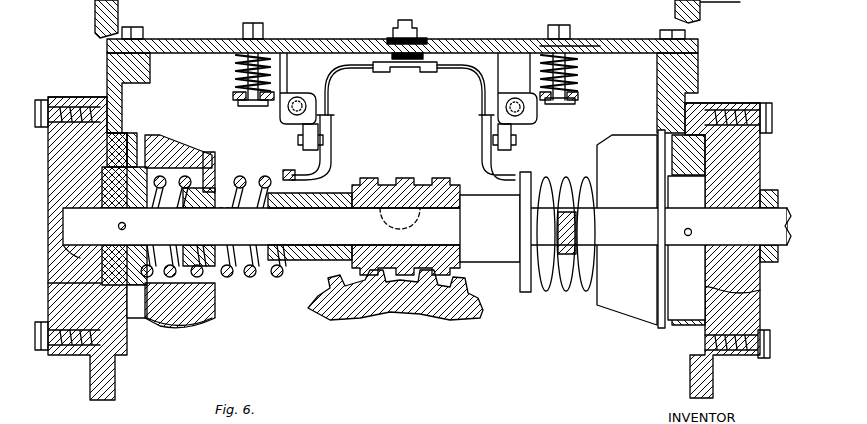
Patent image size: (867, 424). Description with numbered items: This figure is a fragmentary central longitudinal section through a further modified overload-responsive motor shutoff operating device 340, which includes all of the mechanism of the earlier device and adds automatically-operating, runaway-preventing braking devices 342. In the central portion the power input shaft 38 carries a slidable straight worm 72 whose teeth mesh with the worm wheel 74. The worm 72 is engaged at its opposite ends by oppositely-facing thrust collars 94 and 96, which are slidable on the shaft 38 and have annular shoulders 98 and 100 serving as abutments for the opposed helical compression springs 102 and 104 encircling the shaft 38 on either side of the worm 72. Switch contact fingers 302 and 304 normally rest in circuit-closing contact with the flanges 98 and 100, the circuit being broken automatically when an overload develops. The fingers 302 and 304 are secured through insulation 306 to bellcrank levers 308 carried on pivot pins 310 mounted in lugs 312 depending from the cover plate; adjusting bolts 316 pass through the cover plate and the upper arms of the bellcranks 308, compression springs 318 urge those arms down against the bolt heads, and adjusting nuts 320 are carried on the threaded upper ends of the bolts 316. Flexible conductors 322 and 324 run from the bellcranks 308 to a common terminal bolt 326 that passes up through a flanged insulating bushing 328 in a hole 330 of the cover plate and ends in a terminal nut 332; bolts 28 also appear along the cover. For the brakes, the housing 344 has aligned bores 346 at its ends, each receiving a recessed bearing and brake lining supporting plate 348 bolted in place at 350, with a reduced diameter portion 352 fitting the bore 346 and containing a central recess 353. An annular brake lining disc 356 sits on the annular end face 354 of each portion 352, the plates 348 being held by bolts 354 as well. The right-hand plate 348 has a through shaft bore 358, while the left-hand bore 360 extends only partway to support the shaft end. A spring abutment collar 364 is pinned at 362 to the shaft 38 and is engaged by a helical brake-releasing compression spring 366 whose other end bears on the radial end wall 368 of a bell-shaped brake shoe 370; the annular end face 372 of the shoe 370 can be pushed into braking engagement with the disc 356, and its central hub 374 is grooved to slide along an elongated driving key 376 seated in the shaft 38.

The bolt 28 is at (133, 30).
The power input shaft 38 is at (63, 223).
The worm 72 is at (425, 180).
The worm wheel 74 is at (425, 318).
The thrust collar 94 is at (482, 262).
The thrust collar 96 is at (330, 193).
The annular shoulder 98 is at (524, 293).
The annular shoulder 100 is at (268, 282).
The helical compression spring 102 is at (546, 178).
The helical compression spring 104 is at (245, 176).
The switch contact finger 302 is at (480, 148).
The switch contact finger 304 is at (333, 150).
The insulation 306 is at (302, 150).
The bellcrank lever 308 is at (264, 107).
The pivot pin 310 is at (297, 96).
The lug 312 is at (497, 66).
The adjusting bolt 316 is at (243, 28).
The compression spring 318 is at (238, 69).
The adjusting nut 320 is at (572, 42).
The flexible conductor 322 is at (480, 92).
The flexible conductor 324 is at (331, 80).
The terminal bolt 326 is at (402, 74).
The flanged insulating bushing 328 is at (428, 38).
The hole 330 is at (428, 54).
The terminal nut 332 is at (392, 32).
The overload-responsive motor shutoff operating device 340 is at (272, 36).
The braking device 342 is at (660, 133).
The housing 344 is at (718, 103).
The bore 346 is at (117, 135).
The bearing and brake lining supporting plate 348 is at (50, 162).
The bolt 350 is at (40, 100).
The reduced diameter portion 352 is at (134, 134).
The central recess 353 is at (48, 292).
The annular end face 354 is at (108, 318).
The brake lining disc 356 is at (135, 320).
The shaft bore 358 is at (768, 190).
The shaft bore 360 is at (63, 247).
The pin 362 is at (127, 226).
The spring abutment collar 364 is at (100, 202).
The brake-releasing compression spring 366 is at (205, 316).
The radial end wall 368 is at (200, 150).
The bell-shaped brake shoe 370 is at (212, 150).
The annular end face 372 is at (178, 322).
The central hub 374 is at (215, 268).
The driving key 376 is at (212, 215).